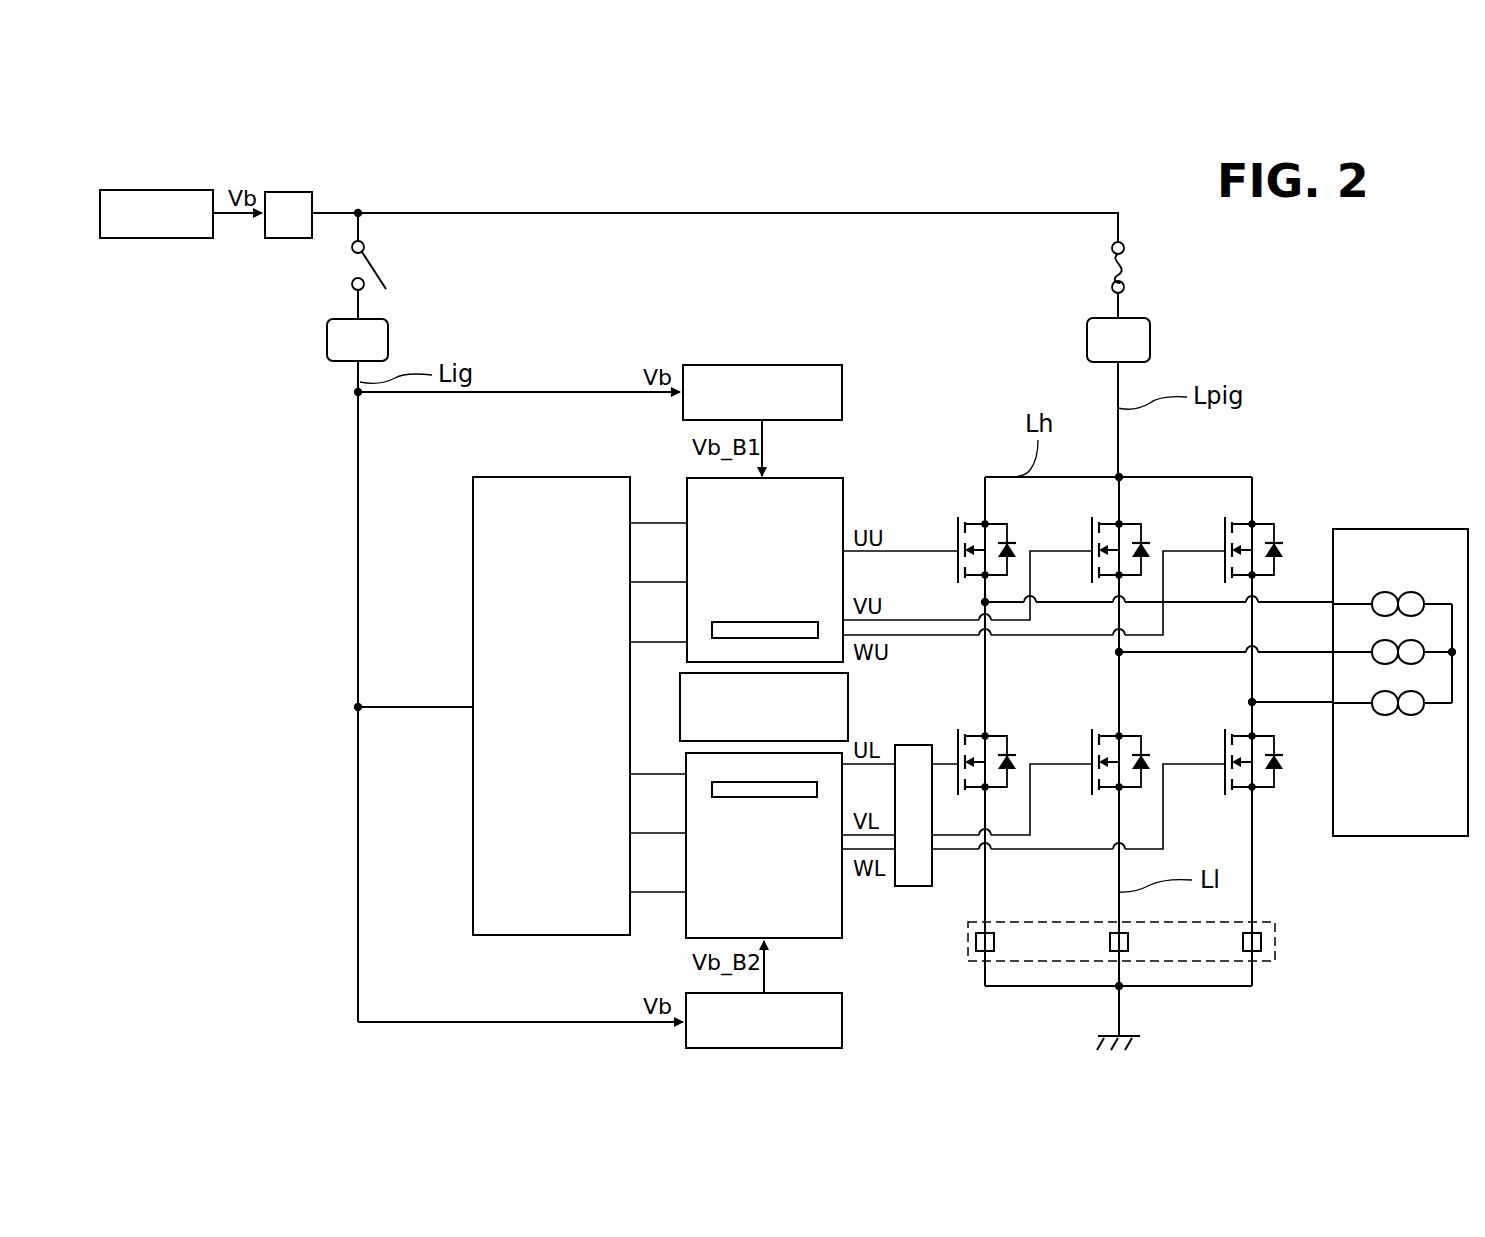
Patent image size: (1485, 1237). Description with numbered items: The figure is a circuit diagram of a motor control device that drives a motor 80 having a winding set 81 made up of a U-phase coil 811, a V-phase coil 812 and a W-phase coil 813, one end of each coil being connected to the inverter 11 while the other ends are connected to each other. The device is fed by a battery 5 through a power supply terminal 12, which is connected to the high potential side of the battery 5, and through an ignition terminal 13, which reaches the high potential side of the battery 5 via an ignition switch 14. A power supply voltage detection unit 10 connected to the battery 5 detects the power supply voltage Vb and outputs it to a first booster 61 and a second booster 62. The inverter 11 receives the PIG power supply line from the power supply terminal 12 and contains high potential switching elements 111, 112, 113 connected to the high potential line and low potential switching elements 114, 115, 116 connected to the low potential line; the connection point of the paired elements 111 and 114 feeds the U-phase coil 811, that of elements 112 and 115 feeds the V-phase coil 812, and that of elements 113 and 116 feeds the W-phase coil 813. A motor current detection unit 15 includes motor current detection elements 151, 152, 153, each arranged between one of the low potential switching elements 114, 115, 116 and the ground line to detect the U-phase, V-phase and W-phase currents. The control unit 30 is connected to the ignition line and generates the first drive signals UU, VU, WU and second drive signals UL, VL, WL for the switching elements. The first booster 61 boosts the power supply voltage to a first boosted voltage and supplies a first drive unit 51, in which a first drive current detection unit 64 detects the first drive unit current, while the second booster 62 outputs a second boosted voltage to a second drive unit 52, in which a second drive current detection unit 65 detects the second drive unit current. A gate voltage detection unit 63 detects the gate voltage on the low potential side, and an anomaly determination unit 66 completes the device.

The battery 5 is at (180, 190).
The power supply voltage detection unit 10 is at (292, 192).
The ignition switch 14 is at (380, 272).
The ignition terminal 13 is at (388, 340).
The power supply terminal 12 is at (1150, 340).
The control unit 30 is at (551, 477).
The first booster 61 is at (842, 392).
The first drive unit 51 is at (806, 478).
The first drive current detection unit 64 is at (764, 620).
The anomaly determination unit 66 is at (848, 705).
The second drive unit 52 is at (813, 938).
The second drive current detection unit 65 is at (817, 790).
The second booster 62 is at (842, 1022).
The gate voltage detection unit 63 is at (914, 886).
The inverter 11 is at (1122, 716).
The high potential switching element 111 is at (980, 522).
The high potential switching element 112 is at (1114, 522).
The high potential switching element 113 is at (1247, 522).
The low potential switching element 114 is at (986, 735).
The low potential switching element 115 is at (1121, 735).
The low potential switching element 116 is at (1248, 736).
The motor 80 is at (1450, 529).
The winding set 81 is at (1398, 684).
The U-phase coil 811 is at (1418, 598).
The V-phase coil 812 is at (1378, 642).
The W-phase coil 813 is at (1392, 722).
The motor current detection unit 15 is at (1146, 934).
The motor current detection element 151 is at (976, 942).
The motor current detection element 152 is at (1110, 942).
The motor current detection element 153 is at (1243, 942).